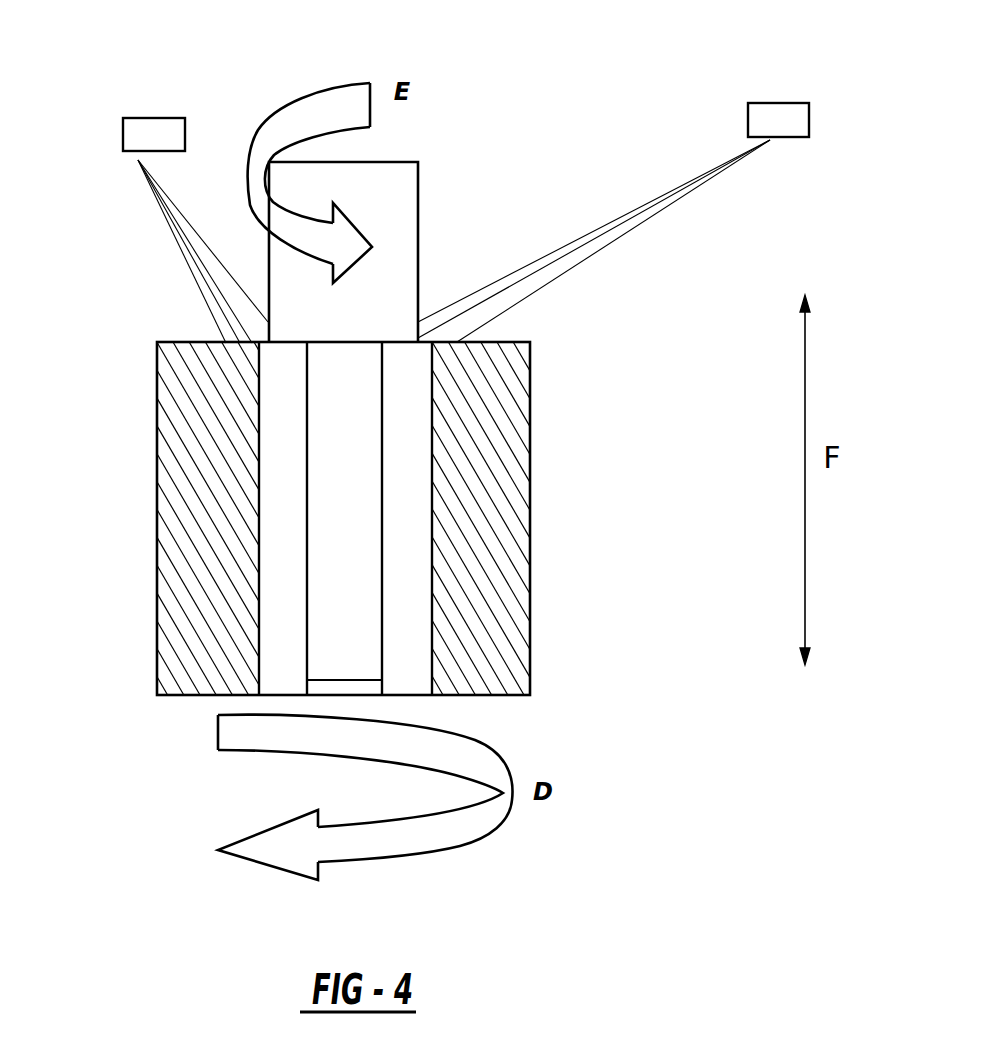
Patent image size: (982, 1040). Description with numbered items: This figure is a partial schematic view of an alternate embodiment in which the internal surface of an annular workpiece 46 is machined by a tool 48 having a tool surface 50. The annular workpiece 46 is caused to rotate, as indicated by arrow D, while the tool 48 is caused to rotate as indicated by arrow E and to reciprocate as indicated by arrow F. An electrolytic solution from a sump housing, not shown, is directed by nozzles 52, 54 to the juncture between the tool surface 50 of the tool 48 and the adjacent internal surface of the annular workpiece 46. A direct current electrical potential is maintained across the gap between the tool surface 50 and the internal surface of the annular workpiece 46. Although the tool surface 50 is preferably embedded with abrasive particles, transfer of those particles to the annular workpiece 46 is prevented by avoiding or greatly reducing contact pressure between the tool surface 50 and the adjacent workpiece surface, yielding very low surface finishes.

The annular workpiece 46 is at (530, 518).
The tool 48 is at (418, 225).
The tool surface 50 is at (383, 572).
The nozzle 52 is at (772, 101).
The nozzle 54 is at (155, 117).